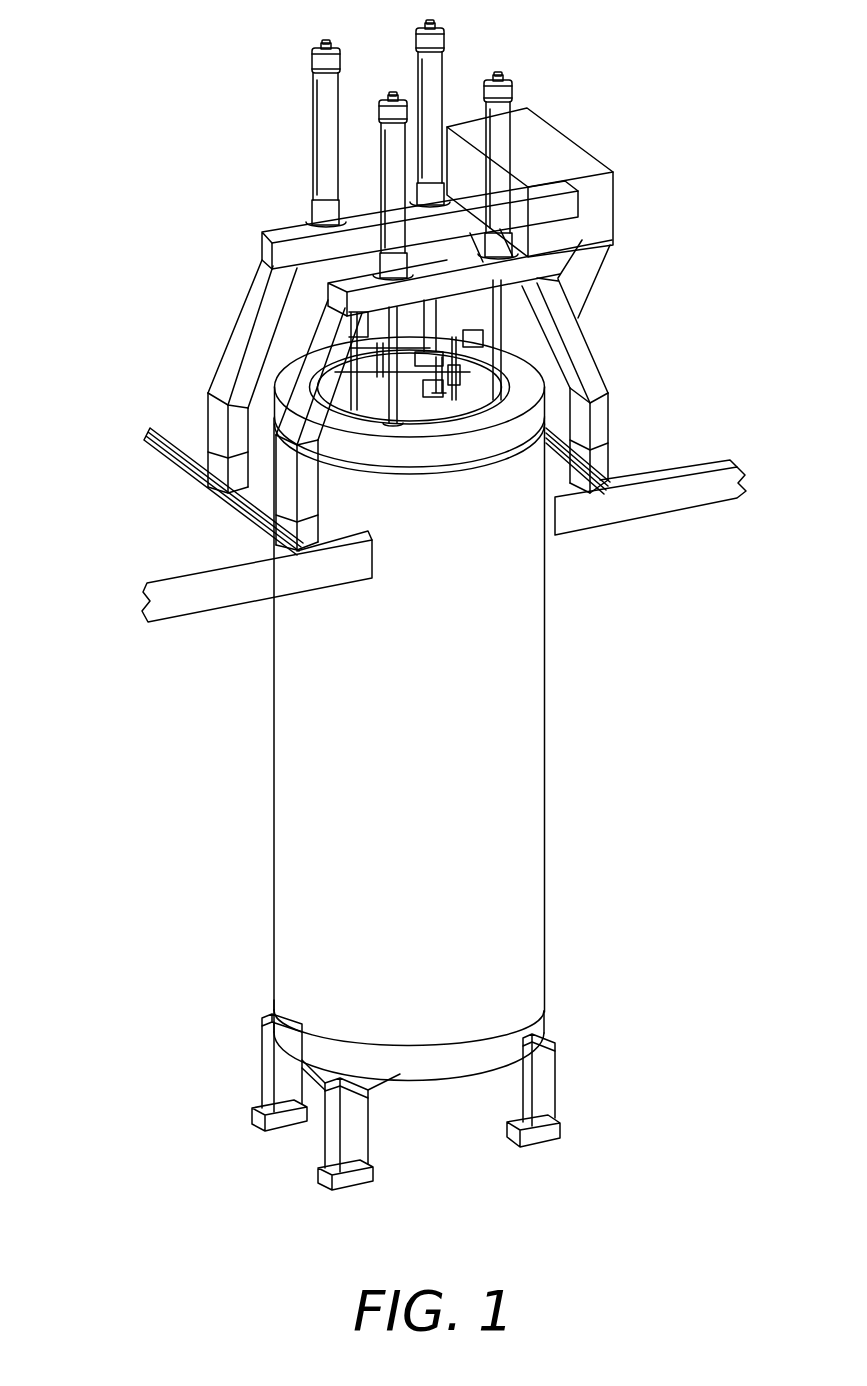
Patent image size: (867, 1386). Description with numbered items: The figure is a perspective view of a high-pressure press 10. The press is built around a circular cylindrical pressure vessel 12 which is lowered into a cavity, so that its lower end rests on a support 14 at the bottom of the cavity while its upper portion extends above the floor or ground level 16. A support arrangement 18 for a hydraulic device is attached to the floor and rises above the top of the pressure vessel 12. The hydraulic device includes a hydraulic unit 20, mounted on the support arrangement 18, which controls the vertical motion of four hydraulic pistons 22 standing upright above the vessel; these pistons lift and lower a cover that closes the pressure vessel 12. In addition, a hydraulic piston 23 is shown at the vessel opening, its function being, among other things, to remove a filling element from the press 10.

The high-pressure press 10 is at (153, 197).
The pressure vessel 12 is at (274, 880).
The support 14 is at (558, 1080).
The floor or ground level 16 is at (695, 467).
The support arrangement 18 is at (213, 348).
The hydraulic unit 20 is at (590, 208).
The hydraulic pistons 22 is at (307, 124).
The hydraulic piston 23 is at (500, 372).